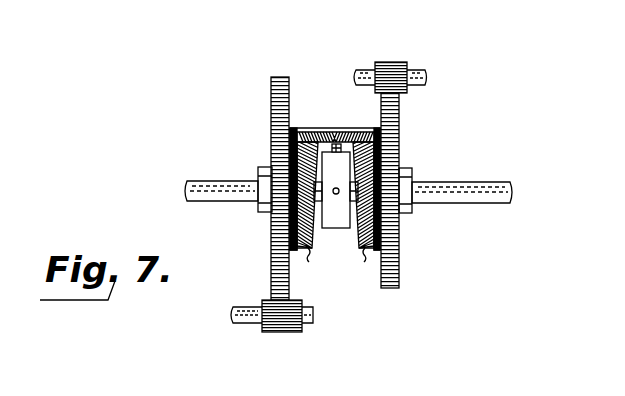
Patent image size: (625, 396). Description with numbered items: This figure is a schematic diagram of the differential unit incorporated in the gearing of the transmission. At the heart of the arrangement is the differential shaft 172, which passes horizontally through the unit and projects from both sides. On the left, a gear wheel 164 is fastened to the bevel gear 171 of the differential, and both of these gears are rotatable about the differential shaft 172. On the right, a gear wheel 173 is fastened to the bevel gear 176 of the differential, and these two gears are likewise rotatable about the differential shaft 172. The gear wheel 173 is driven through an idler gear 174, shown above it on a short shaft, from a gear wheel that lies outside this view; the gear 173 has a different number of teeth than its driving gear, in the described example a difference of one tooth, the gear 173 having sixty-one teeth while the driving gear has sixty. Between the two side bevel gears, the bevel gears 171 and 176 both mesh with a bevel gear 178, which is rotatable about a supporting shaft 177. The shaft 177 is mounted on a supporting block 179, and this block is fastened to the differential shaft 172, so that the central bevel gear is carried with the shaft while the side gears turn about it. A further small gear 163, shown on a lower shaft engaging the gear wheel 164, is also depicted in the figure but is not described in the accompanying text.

The spur gear on lower shaft 163 is at (282, 333).
The gear wheel 164 is at (271, 103).
The bevel gear 171 is at (316, 213).
The differential shaft 172 is at (223, 180).
The gear wheel 173 is at (400, 132).
The idler gear 174 is at (406, 64).
The bevel gear 176 is at (361, 214).
The supporting shaft 177 is at (334, 144).
The bevel gear 178 is at (338, 129).
The supporting block 179 is at (335, 229).